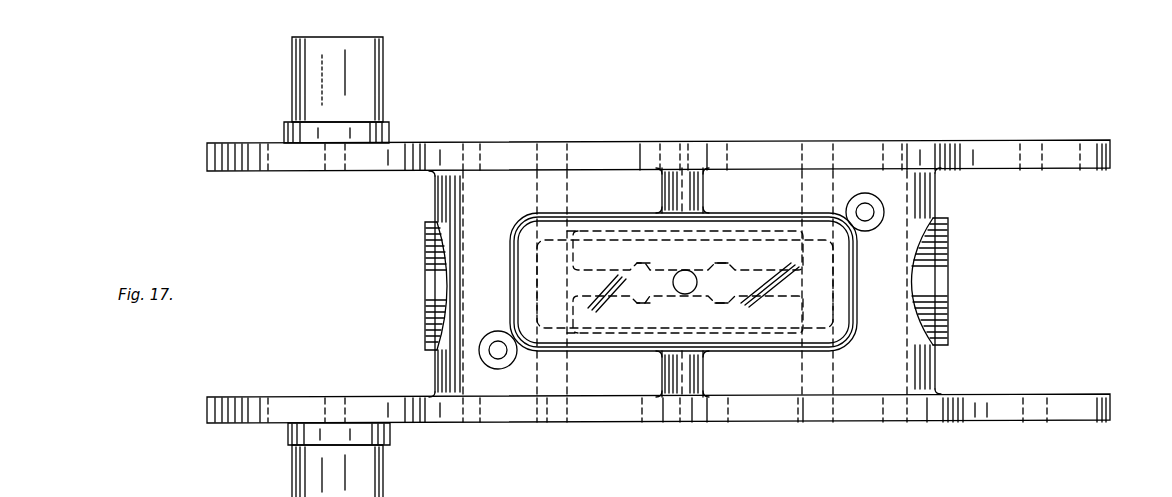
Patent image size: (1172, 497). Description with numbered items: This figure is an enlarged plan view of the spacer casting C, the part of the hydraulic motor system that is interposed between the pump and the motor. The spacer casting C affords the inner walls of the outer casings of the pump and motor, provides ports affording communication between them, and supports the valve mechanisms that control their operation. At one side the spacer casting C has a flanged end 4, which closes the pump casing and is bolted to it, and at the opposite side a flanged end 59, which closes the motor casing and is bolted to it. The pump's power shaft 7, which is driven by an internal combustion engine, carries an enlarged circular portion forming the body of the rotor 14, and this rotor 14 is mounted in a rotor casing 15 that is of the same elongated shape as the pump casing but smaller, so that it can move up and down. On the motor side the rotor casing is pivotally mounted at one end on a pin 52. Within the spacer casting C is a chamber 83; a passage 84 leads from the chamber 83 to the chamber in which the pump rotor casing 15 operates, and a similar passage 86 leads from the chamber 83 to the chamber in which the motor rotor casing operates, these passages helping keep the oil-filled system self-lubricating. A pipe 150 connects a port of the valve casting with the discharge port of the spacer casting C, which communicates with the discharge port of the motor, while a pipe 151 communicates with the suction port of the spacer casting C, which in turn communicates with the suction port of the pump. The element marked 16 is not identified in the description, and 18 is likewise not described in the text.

The flanged end 4 is at (632, 150).
The flanged end 59 is at (616, 423).
The upper pivot pin 18 is at (305, 81).
The pin 52 is at (305, 478).
The spacer casting C is at (922, 126).
The passage 84 is at (690, 189).
The passage 86 is at (695, 371).
The rotor 14 is at (575, 248).
The chamber 83 is at (823, 308).
The rotor casing 15 is at (577, 317).
The slot 16 is at (625, 266).
The pipe 150 is at (496, 351).
The pipe 151 is at (868, 212).
The shaft 7 is at (609, 490).